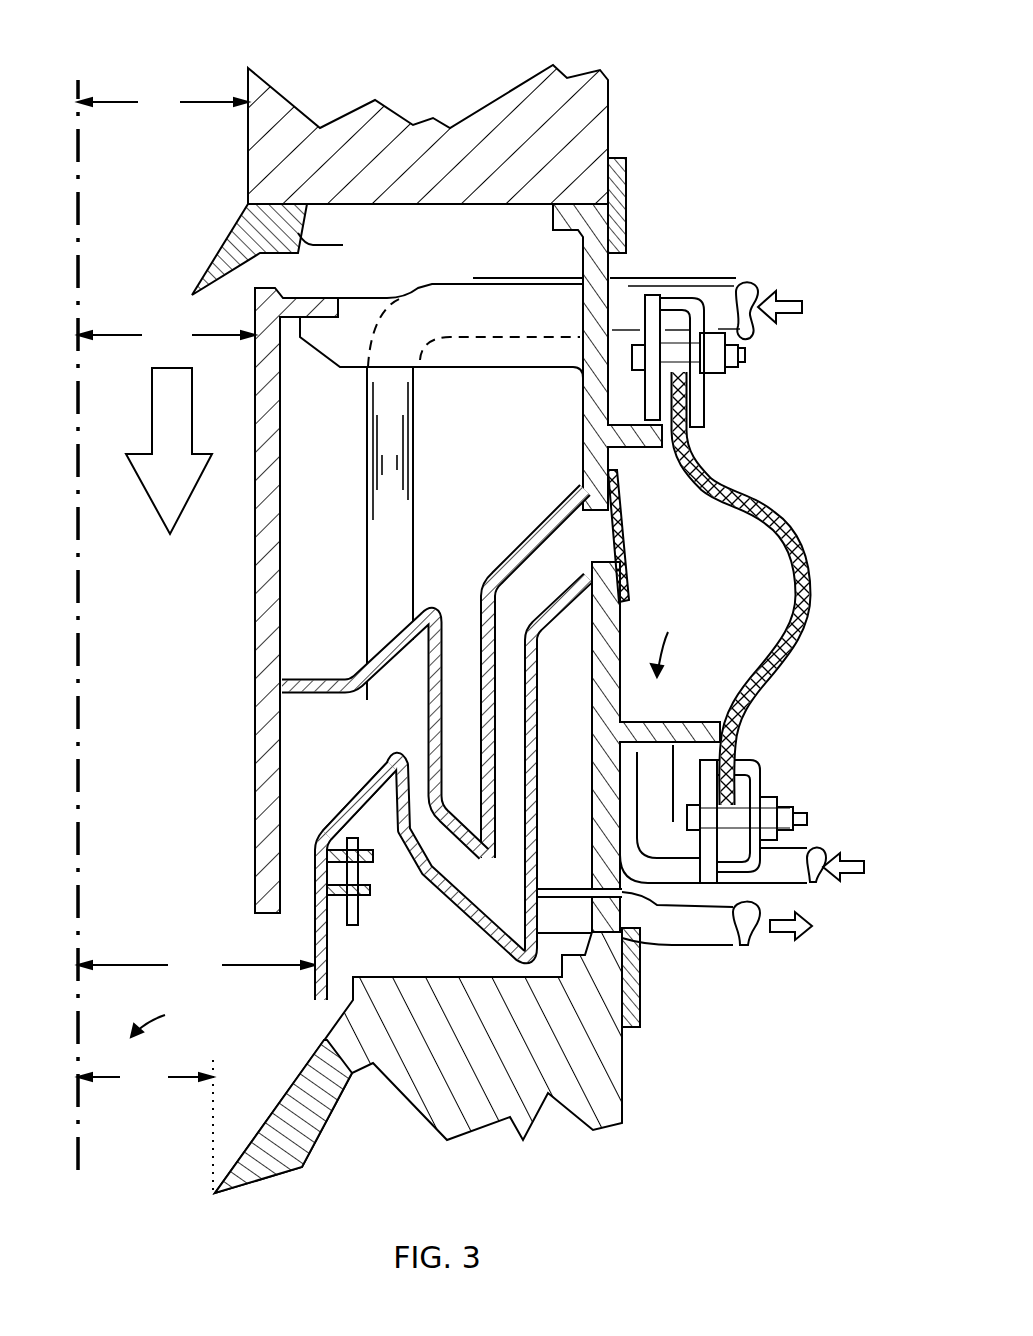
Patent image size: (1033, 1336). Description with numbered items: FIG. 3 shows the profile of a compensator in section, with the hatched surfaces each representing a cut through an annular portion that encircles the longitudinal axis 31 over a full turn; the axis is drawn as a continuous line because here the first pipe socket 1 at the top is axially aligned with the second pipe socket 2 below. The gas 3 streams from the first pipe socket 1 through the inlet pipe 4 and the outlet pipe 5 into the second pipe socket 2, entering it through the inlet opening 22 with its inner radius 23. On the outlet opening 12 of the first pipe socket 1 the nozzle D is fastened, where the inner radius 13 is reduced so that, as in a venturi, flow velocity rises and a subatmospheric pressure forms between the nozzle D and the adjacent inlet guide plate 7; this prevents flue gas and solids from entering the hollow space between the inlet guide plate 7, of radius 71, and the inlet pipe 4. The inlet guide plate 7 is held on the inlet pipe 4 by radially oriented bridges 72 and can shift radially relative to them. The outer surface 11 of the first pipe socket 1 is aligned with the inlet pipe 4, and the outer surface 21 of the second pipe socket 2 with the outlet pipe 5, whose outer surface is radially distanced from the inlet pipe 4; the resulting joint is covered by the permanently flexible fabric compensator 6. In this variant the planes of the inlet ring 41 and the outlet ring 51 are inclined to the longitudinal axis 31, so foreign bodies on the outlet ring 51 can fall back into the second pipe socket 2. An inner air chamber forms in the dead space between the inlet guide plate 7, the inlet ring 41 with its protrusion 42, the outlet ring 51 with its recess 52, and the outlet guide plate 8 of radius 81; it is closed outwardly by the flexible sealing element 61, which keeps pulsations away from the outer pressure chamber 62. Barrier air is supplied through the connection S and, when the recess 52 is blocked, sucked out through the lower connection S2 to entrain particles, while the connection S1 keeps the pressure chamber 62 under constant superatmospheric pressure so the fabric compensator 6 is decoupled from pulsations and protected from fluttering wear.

The first pipe socket 1 is at (413, 137).
The second pipe socket 2 is at (437, 1097).
The gas 3 is at (169, 451).
The inlet pipe 4 is at (600, 303).
The outlet pipe 5 is at (598, 796).
The fabric compensator 6 is at (718, 483).
The inlet guide plate 7 is at (267, 580).
The outlet guide plate 8 is at (328, 945).
The outer surface of the first pipe socket 11 is at (620, 128).
The outlet opening of the first pipe socket 12 is at (168, 218).
The inner radius of the first pipe socket 13 is at (163, 102).
The outer surface of the second pipe socket 21 is at (632, 1078).
The inlet opening of the second pipe socket 22 is at (165, 1012).
The inner radius of the second pipe socket 23 is at (145, 1127).
The longitudinal axis 31 is at (70, 609).
The inlet ring 41 is at (544, 527).
The protrusion 42 is at (442, 818).
The outlet ring 51 is at (367, 792).
The recess 52 is at (534, 731).
The flexible sealing element 61 is at (632, 553).
The pressure chamber 62 is at (686, 637).
The radius of the inlet guide plate 71 is at (166, 335).
The bridge 72 is at (453, 340).
The radius of the outlet guide plate 81 is at (196, 965).
The nozzle D is at (333, 247).
The barrier air connection S is at (720, 298).
The connection for pressurizing the pressure chamber S1 is at (817, 847).
The second barrier air connection S2 is at (724, 941).